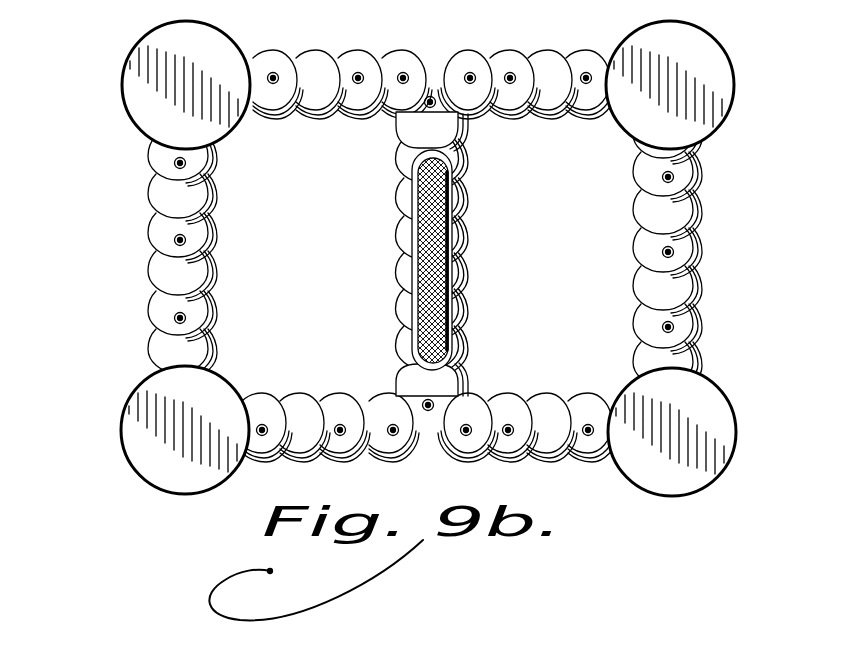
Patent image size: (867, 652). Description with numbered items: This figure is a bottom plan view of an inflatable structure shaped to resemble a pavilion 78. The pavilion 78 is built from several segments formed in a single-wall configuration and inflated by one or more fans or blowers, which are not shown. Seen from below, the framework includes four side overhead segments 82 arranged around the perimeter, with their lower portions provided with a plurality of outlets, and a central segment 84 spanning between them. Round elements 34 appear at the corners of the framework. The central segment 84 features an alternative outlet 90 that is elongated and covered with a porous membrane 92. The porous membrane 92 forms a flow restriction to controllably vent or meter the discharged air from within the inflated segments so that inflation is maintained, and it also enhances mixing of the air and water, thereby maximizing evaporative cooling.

The pavilion 78 is at (389, 259).
The side overhead segments 82 is at (355, 60).
The ornamental discs 34 is at (651, 125).
The central segment 84 is at (462, 272).
The outlet 90 is at (420, 250).
The porous membrane 92 is at (427, 278).